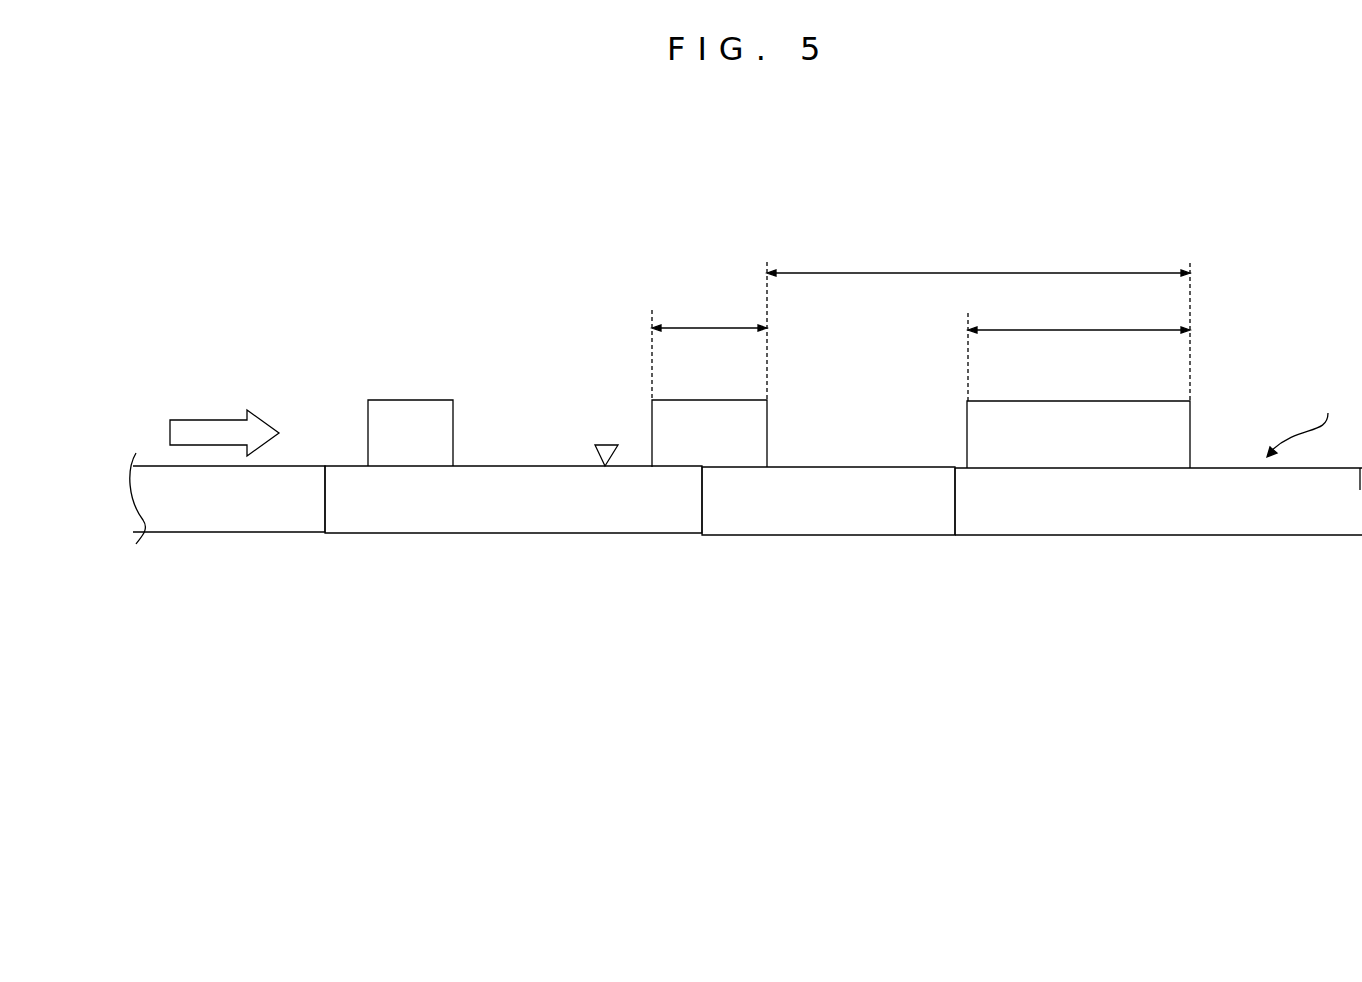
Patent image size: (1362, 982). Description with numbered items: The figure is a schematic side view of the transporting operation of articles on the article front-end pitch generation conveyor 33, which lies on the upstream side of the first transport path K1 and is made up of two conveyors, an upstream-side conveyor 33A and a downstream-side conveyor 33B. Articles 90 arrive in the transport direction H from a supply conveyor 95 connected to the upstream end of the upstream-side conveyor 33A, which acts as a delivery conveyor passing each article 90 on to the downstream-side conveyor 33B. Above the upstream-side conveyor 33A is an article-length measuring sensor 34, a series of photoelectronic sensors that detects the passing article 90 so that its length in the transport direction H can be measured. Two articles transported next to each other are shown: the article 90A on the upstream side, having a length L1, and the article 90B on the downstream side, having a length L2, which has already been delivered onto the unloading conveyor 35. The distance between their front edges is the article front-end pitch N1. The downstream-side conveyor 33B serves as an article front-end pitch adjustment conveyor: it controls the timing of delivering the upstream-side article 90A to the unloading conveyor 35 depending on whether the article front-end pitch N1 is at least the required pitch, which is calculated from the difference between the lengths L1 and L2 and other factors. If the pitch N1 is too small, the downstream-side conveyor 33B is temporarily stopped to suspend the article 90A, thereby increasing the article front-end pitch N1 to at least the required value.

The article 90 is at (447, 411).
The article on the upstream side 90A is at (760, 413).
The article on the downstream side 90B is at (1178, 413).
The supply conveyor 95 is at (247, 520).
The article front-end pitch generation conveyor 33 is at (640, 577).
The upstream-side conveyor 33A is at (602, 522).
The downstream-side conveyor 33B is at (800, 522).
The article-length measuring sensor 34 is at (605, 443).
The unloading conveyor 35 is at (1267, 525).
The transport direction H is at (212, 427).
The first transport path K1 is at (1304, 423).
The article front-end pitch N1 is at (978, 261).
The length of the article on the upstream side L1 is at (709, 331).
The length of the article on the downstream side L2 is at (1079, 332).